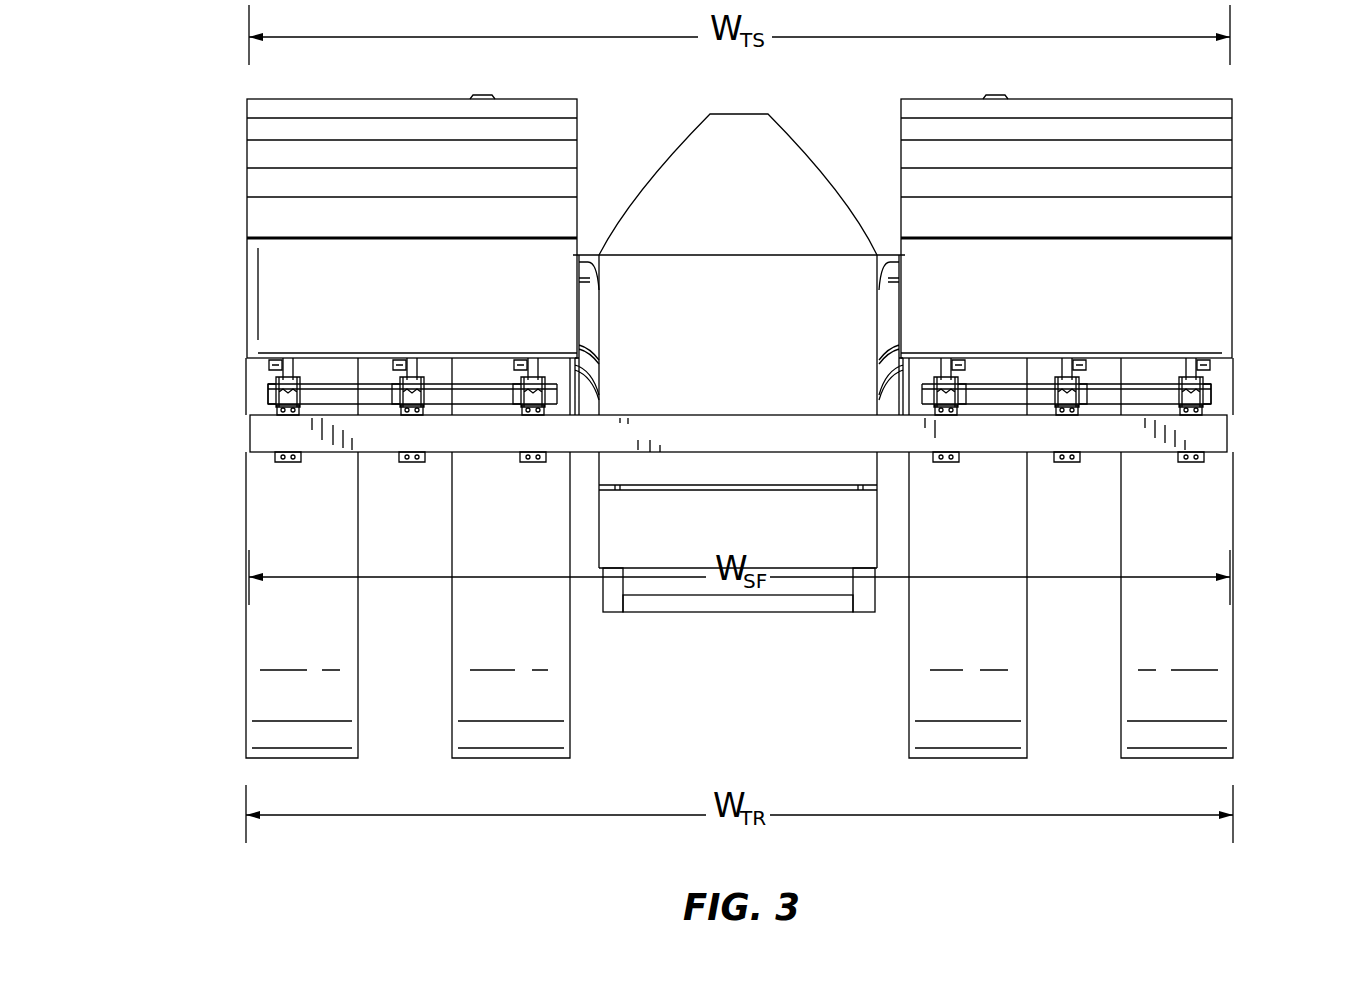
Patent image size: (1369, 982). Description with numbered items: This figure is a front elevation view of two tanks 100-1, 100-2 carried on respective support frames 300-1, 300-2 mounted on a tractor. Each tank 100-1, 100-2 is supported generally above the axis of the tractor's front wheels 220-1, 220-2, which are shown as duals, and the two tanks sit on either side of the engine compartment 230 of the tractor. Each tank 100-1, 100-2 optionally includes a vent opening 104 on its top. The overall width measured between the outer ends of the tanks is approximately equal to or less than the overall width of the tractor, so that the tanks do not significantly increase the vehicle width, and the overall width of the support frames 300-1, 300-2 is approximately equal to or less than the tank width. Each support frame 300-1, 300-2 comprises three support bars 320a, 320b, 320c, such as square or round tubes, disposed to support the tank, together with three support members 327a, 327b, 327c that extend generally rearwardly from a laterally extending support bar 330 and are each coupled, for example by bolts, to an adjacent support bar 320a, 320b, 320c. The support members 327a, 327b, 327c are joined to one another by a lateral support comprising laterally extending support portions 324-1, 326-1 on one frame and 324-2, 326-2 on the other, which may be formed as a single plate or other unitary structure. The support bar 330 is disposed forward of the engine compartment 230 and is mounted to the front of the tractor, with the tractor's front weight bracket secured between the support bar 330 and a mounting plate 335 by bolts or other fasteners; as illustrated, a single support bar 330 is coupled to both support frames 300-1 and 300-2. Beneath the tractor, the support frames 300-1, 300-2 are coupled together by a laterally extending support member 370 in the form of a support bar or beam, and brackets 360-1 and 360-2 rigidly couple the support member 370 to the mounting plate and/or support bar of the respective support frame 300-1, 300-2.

The tank 100-1 is at (1218, 131).
The tank 100-2 is at (263, 131).
The vent opening 104 is at (484, 97).
The engine compartment 230 is at (746, 138).
The support bar 330 is at (740, 437).
The mounting plate 335 is at (732, 490).
The bracket 360-1 is at (865, 602).
The bracket 360-2 is at (612, 602).
The support member 370 is at (692, 598).
The front wheel 220-1 is at (1200, 612).
The front wheel 220-2 is at (260, 682).
The support frame 300-1 is at (1248, 407).
The support frame 300-2 is at (232, 412).
The laterally extending support portion 324-1 is at (1000, 395).
The laterally extending support portion 324-2 is at (478, 395).
The laterally extending support portion 326-1 is at (1115, 395).
The laterally extending support portion 326-2 is at (363, 393).
The support member 327a is at (535, 368).
The support member 327b is at (410, 368).
The support member 327c is at (290, 368).
The support bar 320a is at (512, 364).
The support bar 320b is at (392, 365).
The support bar 320c is at (270, 365).